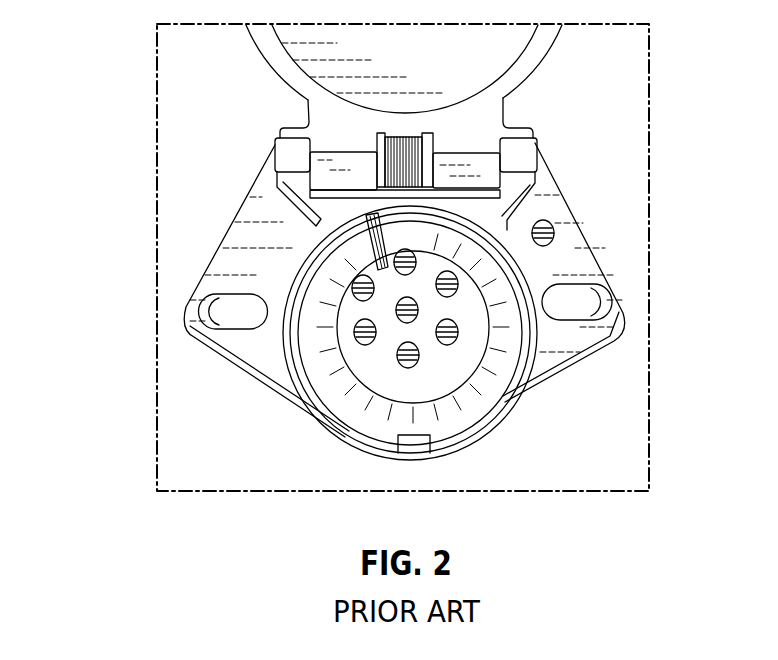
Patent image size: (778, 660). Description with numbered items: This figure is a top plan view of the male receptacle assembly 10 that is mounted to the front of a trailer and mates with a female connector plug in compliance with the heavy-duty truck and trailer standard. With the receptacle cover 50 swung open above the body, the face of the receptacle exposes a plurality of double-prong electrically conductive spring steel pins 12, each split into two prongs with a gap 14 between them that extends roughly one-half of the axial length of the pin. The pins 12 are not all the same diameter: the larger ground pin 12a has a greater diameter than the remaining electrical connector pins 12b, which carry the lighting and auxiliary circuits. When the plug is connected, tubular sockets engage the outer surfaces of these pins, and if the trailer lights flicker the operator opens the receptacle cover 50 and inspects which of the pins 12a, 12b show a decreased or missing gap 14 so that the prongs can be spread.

The male receptacle assembly 10 is at (590, 166).
The double-prong spring steel pins 12 is at (356, 334).
The ground pin 12a is at (412, 255).
The electrical connector pins 12b is at (358, 283).
The gap 14 is at (459, 332).
The receptacle cover 50 is at (535, 70).